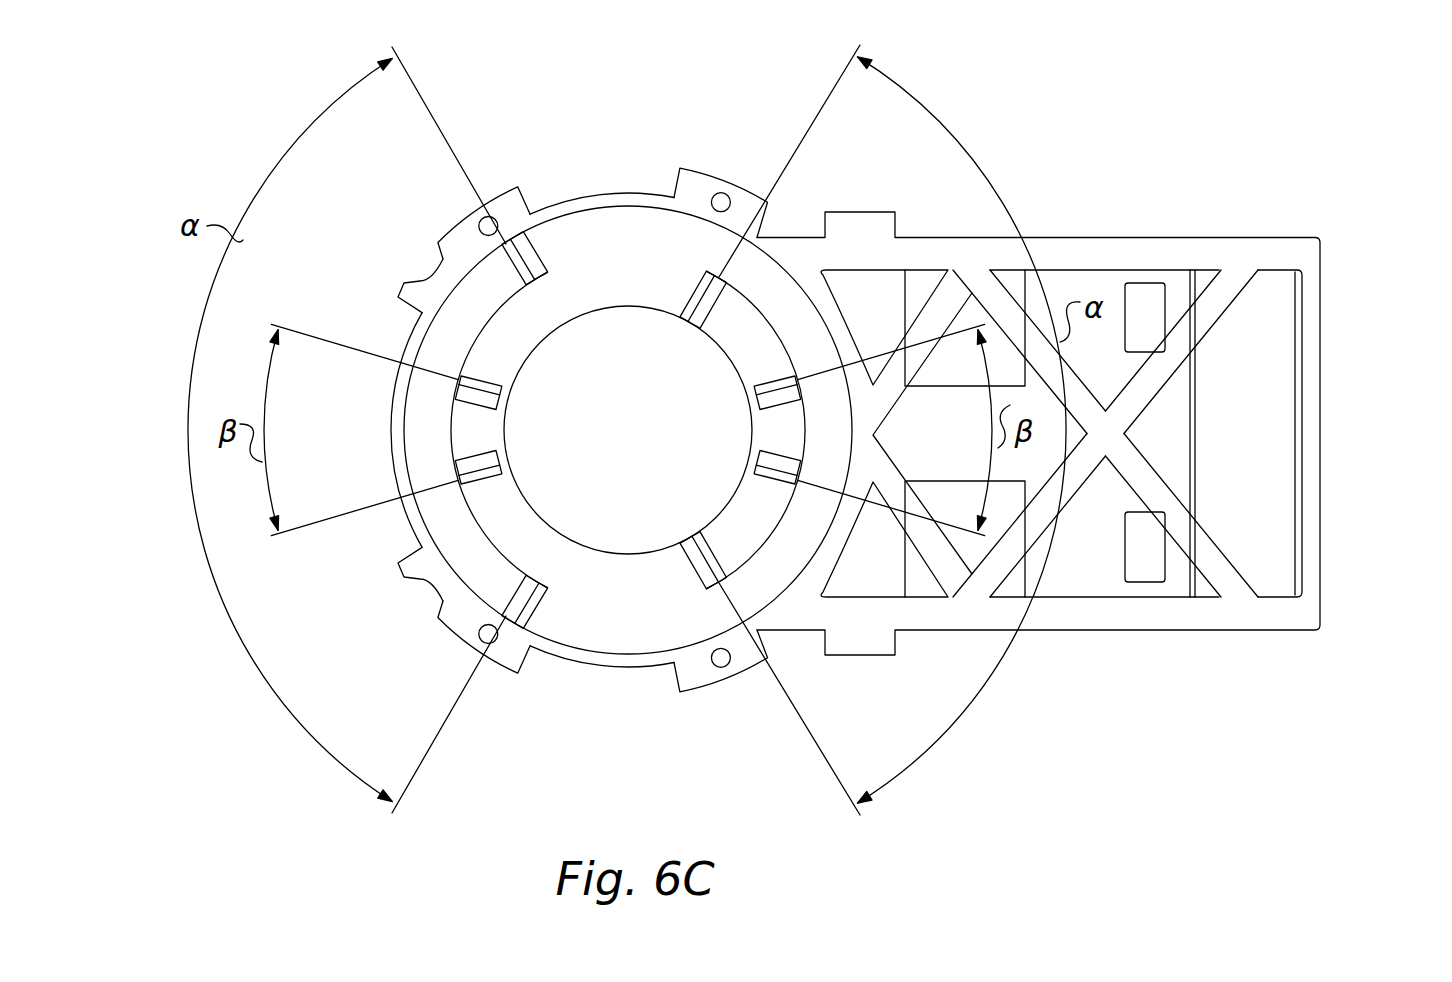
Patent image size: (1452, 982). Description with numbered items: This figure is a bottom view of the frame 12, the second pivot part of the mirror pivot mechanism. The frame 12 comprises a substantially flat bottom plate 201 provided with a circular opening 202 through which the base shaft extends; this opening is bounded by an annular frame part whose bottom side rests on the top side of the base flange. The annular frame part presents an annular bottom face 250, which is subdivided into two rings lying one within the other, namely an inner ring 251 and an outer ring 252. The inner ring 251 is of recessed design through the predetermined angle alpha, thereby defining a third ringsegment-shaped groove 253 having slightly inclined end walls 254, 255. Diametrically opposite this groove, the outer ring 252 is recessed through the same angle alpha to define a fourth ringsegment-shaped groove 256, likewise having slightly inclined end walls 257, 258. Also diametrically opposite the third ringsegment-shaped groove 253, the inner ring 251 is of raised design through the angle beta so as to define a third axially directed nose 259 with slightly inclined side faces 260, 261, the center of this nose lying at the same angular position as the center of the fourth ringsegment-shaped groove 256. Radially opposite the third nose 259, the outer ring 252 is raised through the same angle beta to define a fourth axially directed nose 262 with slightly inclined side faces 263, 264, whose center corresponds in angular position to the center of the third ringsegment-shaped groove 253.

The frame 12 is at (1370, 340).
The bottom plate 201 is at (1196, 237).
The circular opening 202 is at (603, 340).
The annular bottom face 250 is at (565, 617).
The inner ring 251 is at (643, 580).
The outer ring 252 is at (697, 612).
The third ringsegment-shaped groove 253 is at (765, 450).
The end wall 254 is at (694, 563).
The end wall 255 is at (700, 303).
The fourth ringsegment-shaped groove 256 is at (433, 604).
The end wall 257 is at (516, 271).
The end wall 258 is at (464, 645).
The third axially directed nose 259 is at (480, 418).
The side face 260 is at (488, 366).
The side face 261 is at (488, 487).
The fourth axially directed nose 262 is at (817, 413).
The side face 263 is at (812, 532).
The side face 264 is at (784, 338).